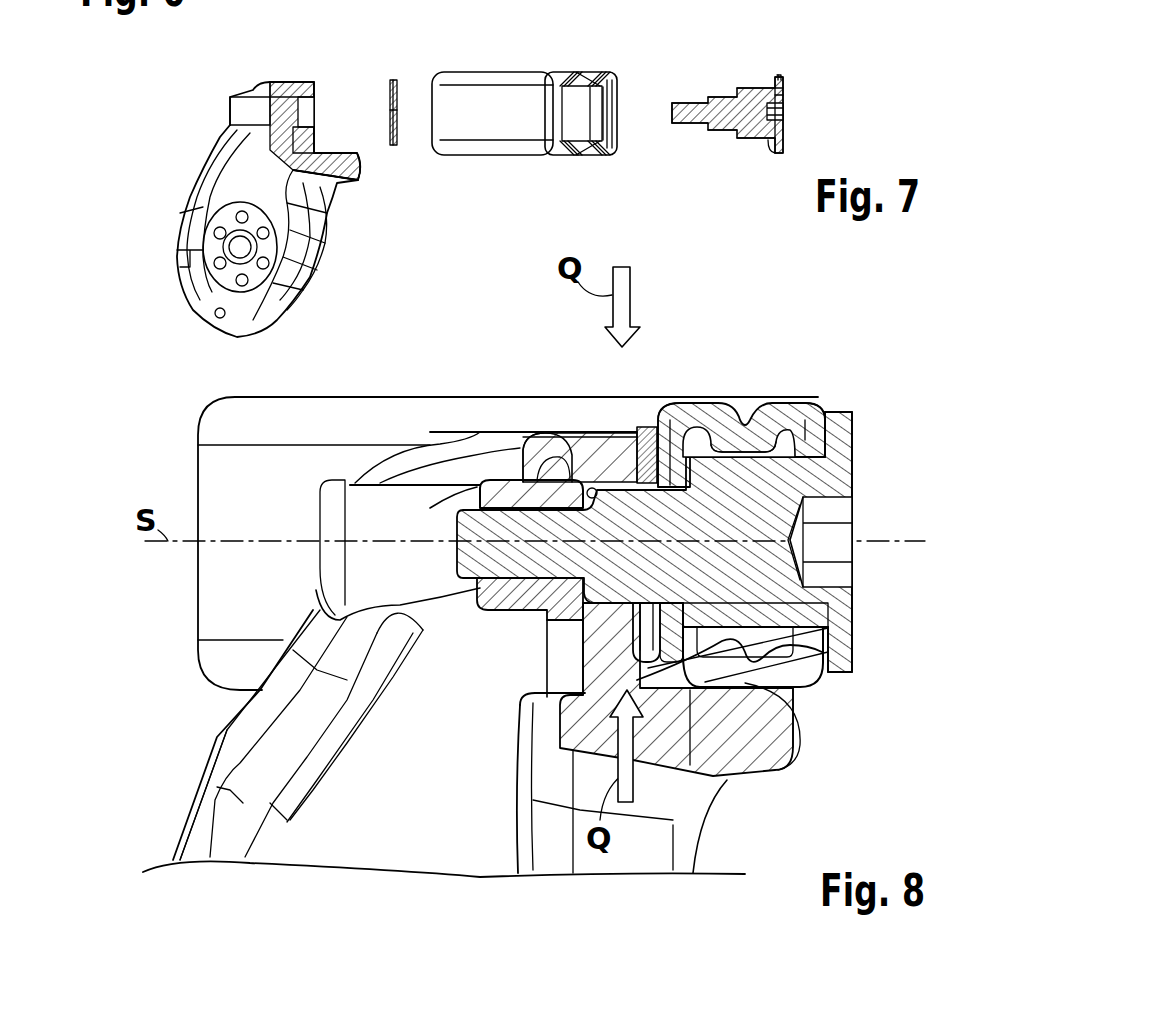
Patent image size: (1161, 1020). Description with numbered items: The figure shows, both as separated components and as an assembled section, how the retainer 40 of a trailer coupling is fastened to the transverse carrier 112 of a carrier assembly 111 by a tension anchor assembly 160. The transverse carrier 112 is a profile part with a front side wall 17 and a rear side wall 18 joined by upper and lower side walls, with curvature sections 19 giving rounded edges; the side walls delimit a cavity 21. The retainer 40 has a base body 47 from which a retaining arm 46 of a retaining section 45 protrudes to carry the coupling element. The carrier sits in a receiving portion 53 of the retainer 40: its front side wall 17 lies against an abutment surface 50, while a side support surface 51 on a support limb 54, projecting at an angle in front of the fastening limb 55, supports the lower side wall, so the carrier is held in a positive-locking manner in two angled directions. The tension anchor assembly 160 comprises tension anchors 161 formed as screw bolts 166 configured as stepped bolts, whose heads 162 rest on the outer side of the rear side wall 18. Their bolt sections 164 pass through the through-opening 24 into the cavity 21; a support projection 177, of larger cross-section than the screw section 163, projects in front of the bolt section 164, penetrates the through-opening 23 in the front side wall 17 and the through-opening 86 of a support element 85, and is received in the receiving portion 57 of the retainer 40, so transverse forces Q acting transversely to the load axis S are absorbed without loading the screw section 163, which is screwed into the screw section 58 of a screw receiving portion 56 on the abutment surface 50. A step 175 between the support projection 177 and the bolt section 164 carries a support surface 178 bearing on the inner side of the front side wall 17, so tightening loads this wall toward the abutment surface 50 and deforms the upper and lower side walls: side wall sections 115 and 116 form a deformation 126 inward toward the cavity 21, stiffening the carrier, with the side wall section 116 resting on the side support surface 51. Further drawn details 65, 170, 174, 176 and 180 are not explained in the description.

In FIG. 8, the front side wall 17 is at (540, 672).
In FIG. 8, the rear side wall 18 is at (832, 655).
In FIG. 7, the curvature sections 19 is at (575, 78).
In FIG. 8, the cavity 21 is at (785, 420).
In FIG. 7, the through-opening 23 is at (568, 110).
In FIG. 7, the through-opening 24 is at (613, 110).
In FIG. 7, the retainer 40 is at (204, 152).
In FIG. 8, the retainer 40 is at (200, 735).
In FIG. 7, the retaining section 45 is at (303, 282).
In FIG. 7, the retaining arm 46 is at (313, 237).
In FIG. 8, the retaining arm 46 is at (200, 807).
In FIG. 7, the base body 47 is at (303, 92).
In FIG. 7, the abutment surface 50 is at (315, 138).
In FIG. 8, the abutment surface 50 is at (565, 675).
In FIG. 7, the side support surface 51 is at (340, 147).
In FIG. 8, the side support surface 51 is at (737, 683).
In FIG. 8, the receiving portion 53 is at (655, 678).
In FIG. 8, the support limb 54 is at (783, 727).
In FIG. 8, the fastening limb 55 is at (570, 610).
In FIG. 7, the screw receiving portions 56 is at (283, 117).
In FIG. 7, the receiving portion 57 is at (310, 112).
In FIG. 8, the receiving portion 57 is at (560, 478).
In FIG. 8, the screw section 58 is at (497, 510).
In FIG. 8, the tool engagement socket 65 is at (845, 545).
In FIG. 7, the support element 85 is at (392, 85).
In FIG. 8, the support element 85 is at (648, 430).
In FIG. 7, the through-opening 86 is at (390, 118).
In FIG. 8, the carrier assembly 111 is at (830, 400).
In FIG. 7, the transverse carrier 112 is at (490, 75).
In FIG. 8, the transverse carrier 112 is at (792, 410).
In FIG. 8, the side wall section 115 is at (770, 440).
In FIG. 8, the side wall section 116 is at (807, 692).
In FIG. 7, the deformation 126 is at (585, 78).
In FIG. 8, the tension anchor assembly 160 is at (868, 452).
In FIG. 7, the tension anchors 161 is at (781, 78).
In FIG. 7, the heads 162 is at (780, 92).
In FIG. 8, the heads 162 is at (840, 608).
In FIG. 7, the screw section 163 is at (688, 102).
In FIG. 8, the screw section 163 is at (520, 605).
In FIG. 8, the bolt sections 164 is at (735, 445).
In FIG. 7, the screw bolts 166 is at (782, 90).
In FIG. 7, the shoulder 170 is at (722, 95).
In FIG. 7, the lower washer 174 is at (770, 145).
In FIG. 8, the lower washer 174 is at (812, 420).
In FIG. 7, the step 175 is at (732, 130).
In FIG. 8, the step 175 is at (695, 420).
In FIG. 8, the lower elastic bushing 176 is at (800, 652).
In FIG. 8, the support projection 177 is at (585, 485).
In FIG. 7, the support surface 178 is at (705, 122).
In FIG. 7, the screw 180 is at (800, 115).
In FIG. 8, the screw 180 is at (872, 498).